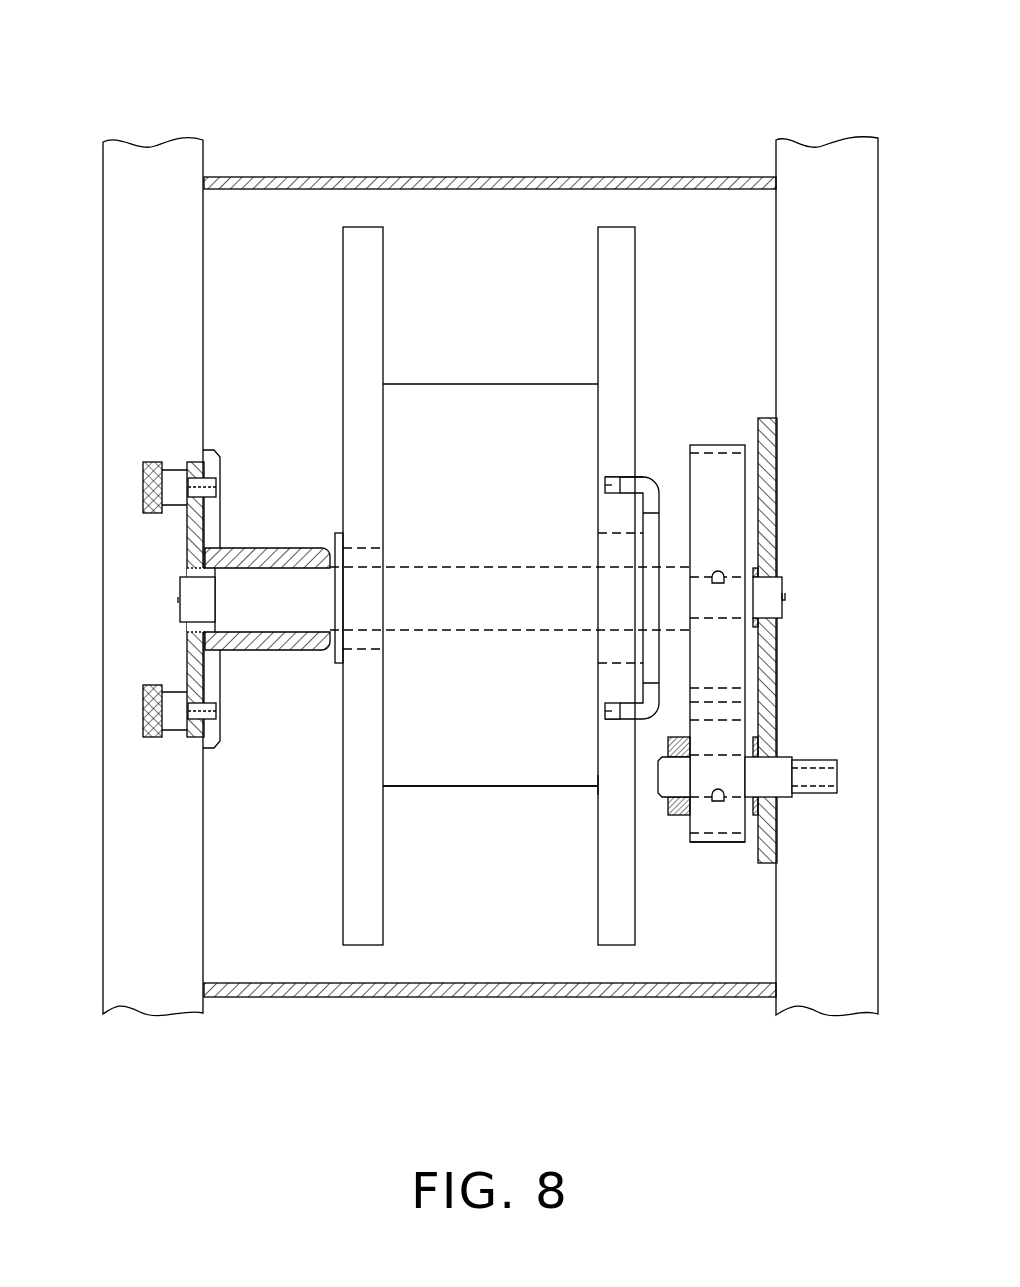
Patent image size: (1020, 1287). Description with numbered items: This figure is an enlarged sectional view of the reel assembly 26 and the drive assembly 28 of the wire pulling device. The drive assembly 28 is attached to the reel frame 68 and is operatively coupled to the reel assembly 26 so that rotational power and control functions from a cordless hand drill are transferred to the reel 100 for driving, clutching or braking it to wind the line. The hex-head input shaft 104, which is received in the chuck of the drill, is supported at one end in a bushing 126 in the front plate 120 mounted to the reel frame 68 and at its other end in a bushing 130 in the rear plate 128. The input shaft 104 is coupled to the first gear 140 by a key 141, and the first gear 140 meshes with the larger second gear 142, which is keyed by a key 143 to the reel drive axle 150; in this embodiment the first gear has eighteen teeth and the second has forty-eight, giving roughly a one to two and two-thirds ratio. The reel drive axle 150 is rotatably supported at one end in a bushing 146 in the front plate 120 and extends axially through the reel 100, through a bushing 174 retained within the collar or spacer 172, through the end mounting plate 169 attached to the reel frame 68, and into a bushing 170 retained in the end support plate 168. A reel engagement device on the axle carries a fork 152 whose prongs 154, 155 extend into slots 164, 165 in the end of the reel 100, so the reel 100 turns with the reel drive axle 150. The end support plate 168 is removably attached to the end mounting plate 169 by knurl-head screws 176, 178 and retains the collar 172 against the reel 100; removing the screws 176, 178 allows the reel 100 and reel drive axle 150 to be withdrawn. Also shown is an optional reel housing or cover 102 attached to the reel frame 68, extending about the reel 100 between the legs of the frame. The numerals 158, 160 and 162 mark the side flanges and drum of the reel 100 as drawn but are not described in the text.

The reel assembly 26 is at (257, 108).
The drive assembly 28 is at (708, 962).
The reel frame 68 is at (113, 277).
The reel 100 is at (315, 953).
The reel housing or cover 102 is at (532, 177).
The input shaft 104 is at (815, 775).
The front plate 120 is at (777, 480).
The bushing 126 is at (778, 718).
The rear plate 128 is at (680, 817).
The bushing 130 is at (658, 762).
The first gear 140 is at (718, 820).
The key 141 is at (718, 788).
The second gear 142 is at (718, 465).
The key 143 is at (718, 570).
The bushing 146 is at (778, 557).
The reel drive axle 150 is at (477, 605).
The fork 152 is at (659, 478).
The prong 154 is at (605, 487).
The prong 155 is at (605, 712).
The left disk 158 is at (360, 922).
The right disk 160 is at (630, 925).
The drum surface 162 is at (462, 787).
The slot 164 is at (627, 475).
The slot 165 is at (630, 723).
The end support plate 168 is at (193, 537).
The end mounting plate 169 is at (212, 518).
The bushing 170 is at (185, 587).
The collar or spacer 172 is at (246, 655).
The bushing 174 is at (333, 667).
The knurl-head screw 176 is at (153, 460).
The knurl-head screw 178 is at (148, 737).